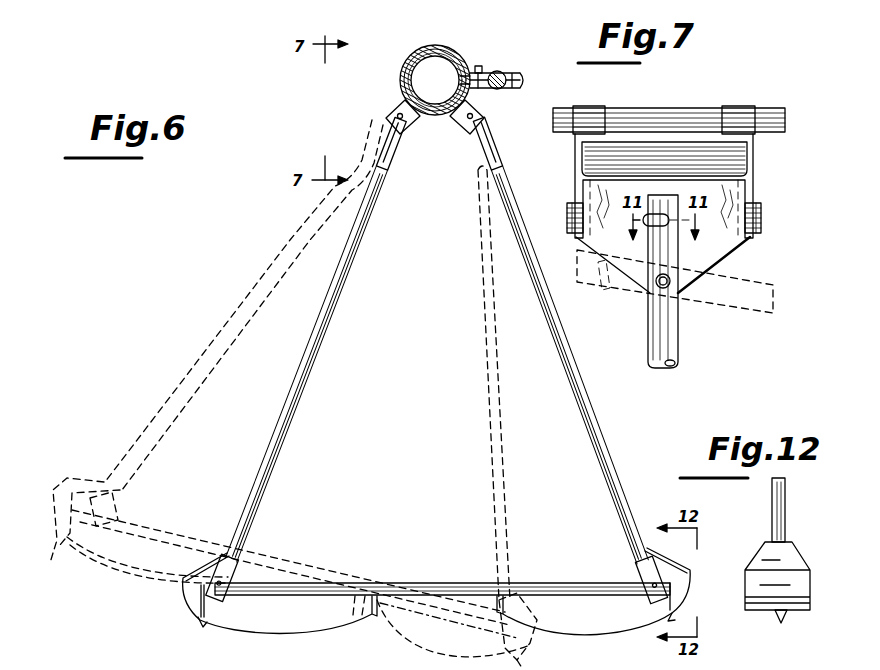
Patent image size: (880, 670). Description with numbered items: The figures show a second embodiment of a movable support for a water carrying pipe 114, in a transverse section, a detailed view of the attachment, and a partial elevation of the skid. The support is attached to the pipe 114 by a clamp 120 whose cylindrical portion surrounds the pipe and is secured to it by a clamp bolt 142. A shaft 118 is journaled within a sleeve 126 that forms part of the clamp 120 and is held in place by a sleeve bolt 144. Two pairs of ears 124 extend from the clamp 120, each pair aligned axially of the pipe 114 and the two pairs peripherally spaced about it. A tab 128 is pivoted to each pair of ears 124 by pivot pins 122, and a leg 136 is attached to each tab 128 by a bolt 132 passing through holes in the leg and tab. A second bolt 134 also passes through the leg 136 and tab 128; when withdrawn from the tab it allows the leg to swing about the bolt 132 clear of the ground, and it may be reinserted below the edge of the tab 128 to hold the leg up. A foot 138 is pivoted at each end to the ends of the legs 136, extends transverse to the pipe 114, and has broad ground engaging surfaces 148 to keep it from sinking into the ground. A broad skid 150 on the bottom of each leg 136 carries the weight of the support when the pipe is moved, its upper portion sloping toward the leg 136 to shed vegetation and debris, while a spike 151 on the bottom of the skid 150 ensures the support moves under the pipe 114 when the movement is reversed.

In FIG. 6, the water carrying pipe 114 is at (402, 77).
In FIG. 7, the water carrying pipe 114 is at (666, 110).
In FIG. 6, the shaft 118 is at (500, 70).
In FIG. 6, the clamp 120 is at (447, 46).
In FIG. 7, the clamp 120 is at (590, 112).
In FIG. 6, the pivot pins 122 is at (468, 122).
In FIG. 7, the pivot pins 122 is at (568, 212).
In FIG. 6, the ears 124 is at (462, 100).
In FIG. 7, the ears 124 is at (576, 158).
In FIG. 6, the sleeve 126 is at (503, 90).
In FIG. 7, the tab 128 is at (730, 248).
In FIG. 7, the bolt 132 is at (657, 287).
In FIG. 7, the second bolt 134 is at (646, 226).
In FIG. 6, the leg 136 is at (244, 300).
In FIG. 7, the leg 136 is at (679, 319).
In FIG. 12, the leg 136 is at (785, 494).
In FIG. 6, the foot 138 is at (165, 532).
In FIG. 6, the clamp bolt 142 is at (478, 66).
In FIG. 6, the sleeve bolt 144 is at (517, 82).
In FIG. 6, the ground engaging surfaces 148 is at (124, 572).
In FIG. 6, the skid 150 is at (66, 485).
In FIG. 12, the skid 150 is at (790, 554).
In FIG. 6, the spike 151 is at (696, 614).
In FIG. 12, the spike 151 is at (784, 618).